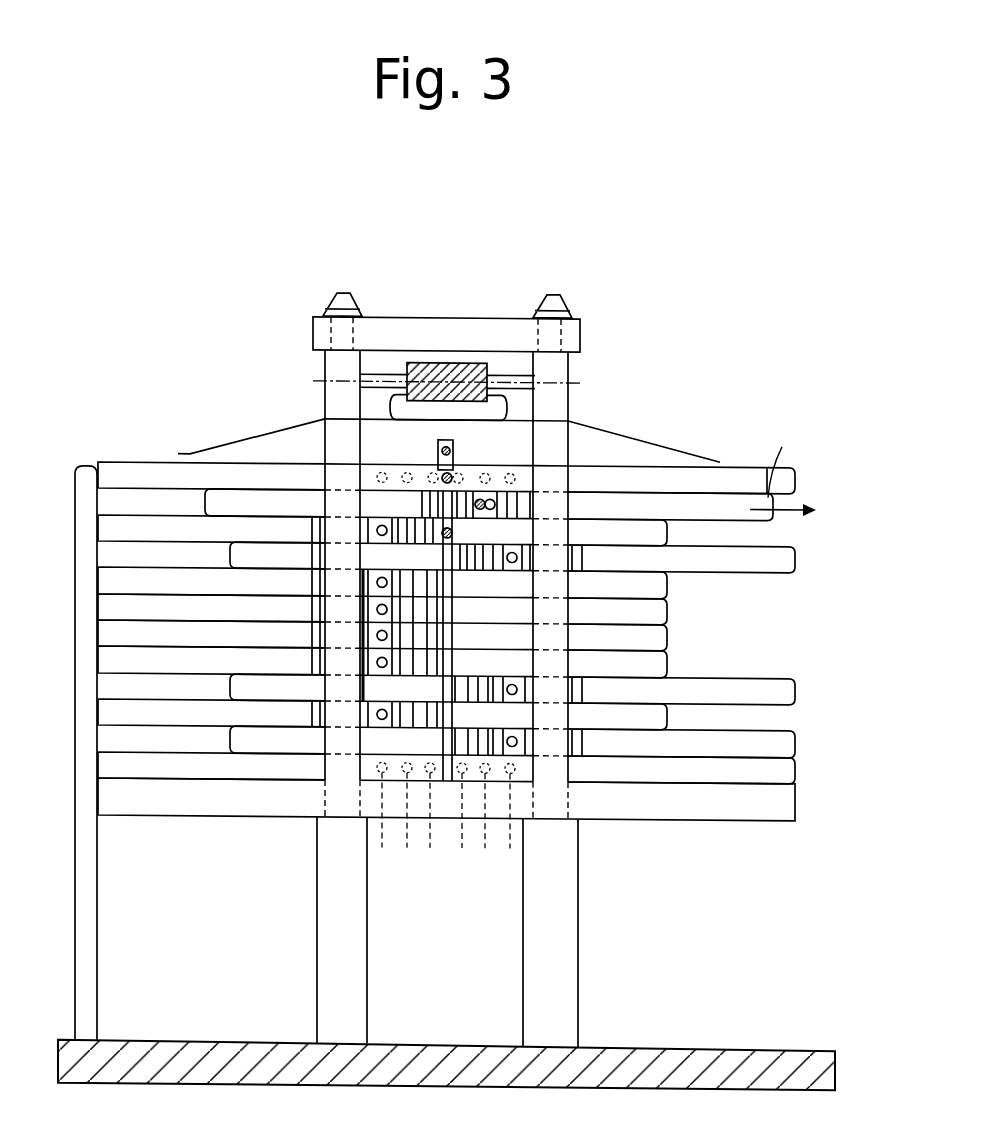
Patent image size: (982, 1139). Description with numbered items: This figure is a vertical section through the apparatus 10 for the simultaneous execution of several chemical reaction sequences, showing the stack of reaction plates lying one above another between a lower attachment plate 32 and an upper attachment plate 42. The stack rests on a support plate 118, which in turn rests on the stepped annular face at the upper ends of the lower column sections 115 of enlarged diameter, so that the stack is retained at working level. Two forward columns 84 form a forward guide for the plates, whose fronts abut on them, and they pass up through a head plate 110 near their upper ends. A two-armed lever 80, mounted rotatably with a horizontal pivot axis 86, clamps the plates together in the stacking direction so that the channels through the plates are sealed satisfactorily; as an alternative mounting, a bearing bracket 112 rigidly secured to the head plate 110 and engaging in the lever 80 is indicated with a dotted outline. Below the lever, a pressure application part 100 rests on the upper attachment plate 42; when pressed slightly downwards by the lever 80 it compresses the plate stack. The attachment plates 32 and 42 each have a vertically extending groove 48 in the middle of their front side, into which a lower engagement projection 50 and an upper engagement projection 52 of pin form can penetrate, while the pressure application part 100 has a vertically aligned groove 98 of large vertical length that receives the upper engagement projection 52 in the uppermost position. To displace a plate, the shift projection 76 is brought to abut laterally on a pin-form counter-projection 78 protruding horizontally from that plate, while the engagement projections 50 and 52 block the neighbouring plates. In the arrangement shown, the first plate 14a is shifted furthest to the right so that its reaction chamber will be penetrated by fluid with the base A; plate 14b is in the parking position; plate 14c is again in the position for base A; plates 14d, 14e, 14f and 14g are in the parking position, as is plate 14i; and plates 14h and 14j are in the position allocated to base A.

The apparatus 10 is at (632, 272).
The head plate 110 is at (392, 316).
The two-armed lever 80 is at (420, 316).
The forward columns 84 is at (333, 365).
The bearing bracket 112 is at (470, 372).
The horizontal pivot axis 86 is at (520, 388).
The pressure application part 100 is at (290, 438).
The upper attachment plate 42 is at (730, 477).
The first plate 14a is at (773, 523).
The plate 14b is at (662, 535).
The plate 14c is at (787, 570).
The plate 14d is at (665, 588).
The plate 14e is at (667, 617).
The plate 14f is at (660, 642).
The plate 14g is at (660, 668).
The plate 14h is at (787, 688).
The plate 14i is at (662, 718).
The plate 14j is at (787, 747).
The lower attachment plate 32 is at (788, 775).
The support plate 118 is at (770, 815).
The lower column section 115 is at (317, 908).
The upper engagement projection 52 is at (445, 474).
The groove 98 is at (458, 441).
The shift projection 76 is at (484, 497).
The counter-projection 78 is at (497, 503).
The lower engagement projection 50 is at (446, 541).
The groove 48 is at (452, 782).